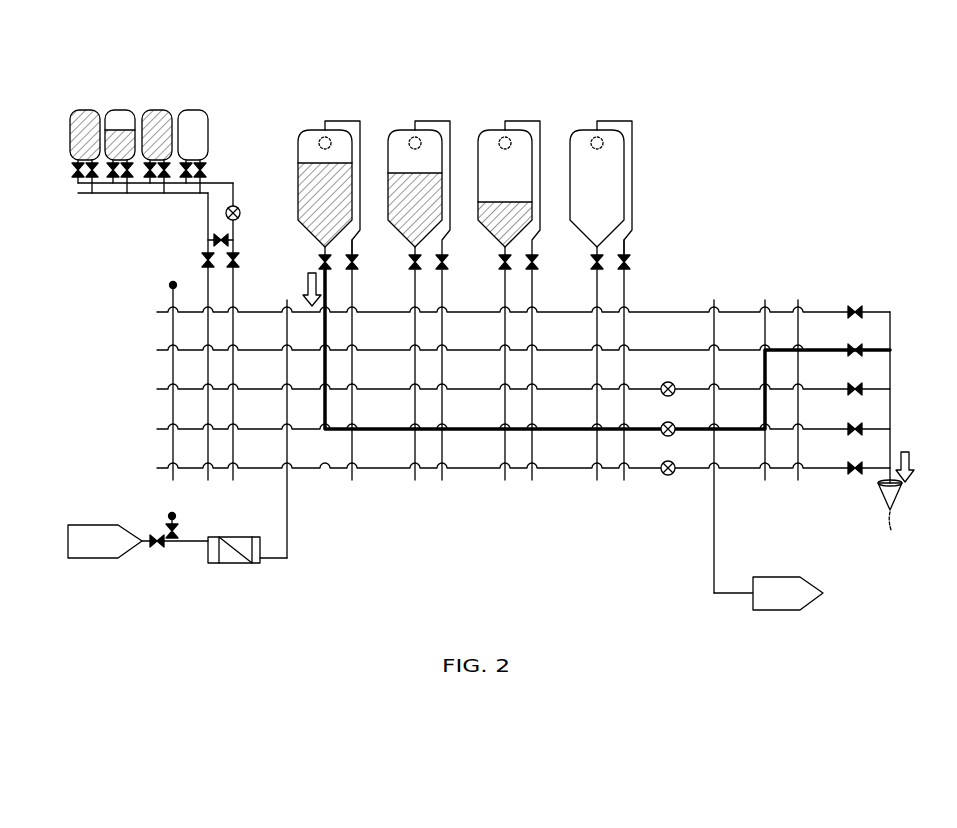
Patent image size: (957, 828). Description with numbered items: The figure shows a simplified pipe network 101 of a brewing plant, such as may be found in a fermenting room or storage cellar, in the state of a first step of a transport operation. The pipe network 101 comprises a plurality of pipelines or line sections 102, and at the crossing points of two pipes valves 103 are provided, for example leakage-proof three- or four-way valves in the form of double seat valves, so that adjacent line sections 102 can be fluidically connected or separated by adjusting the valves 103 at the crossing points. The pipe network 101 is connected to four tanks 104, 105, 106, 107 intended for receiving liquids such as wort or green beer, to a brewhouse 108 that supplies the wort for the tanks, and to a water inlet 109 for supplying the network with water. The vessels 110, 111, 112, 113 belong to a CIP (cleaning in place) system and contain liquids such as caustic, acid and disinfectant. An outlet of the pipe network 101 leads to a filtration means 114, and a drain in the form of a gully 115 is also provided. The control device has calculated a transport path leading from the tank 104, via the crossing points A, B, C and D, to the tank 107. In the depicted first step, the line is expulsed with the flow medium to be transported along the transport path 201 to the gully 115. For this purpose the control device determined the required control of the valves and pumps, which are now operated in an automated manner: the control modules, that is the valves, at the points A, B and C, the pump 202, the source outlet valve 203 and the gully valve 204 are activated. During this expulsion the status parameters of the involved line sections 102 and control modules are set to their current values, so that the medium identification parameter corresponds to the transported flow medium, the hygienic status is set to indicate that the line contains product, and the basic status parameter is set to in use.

The pipe network 101 is at (697, 273).
The line sections 102 is at (478, 470).
The valves 103 is at (414, 472).
The tank 104 is at (302, 130).
The tank 105 is at (392, 130).
The tank 106 is at (482, 130).
The tank 107 is at (572, 130).
The brewhouse 108 is at (95, 525).
The water inlet 109 is at (169, 285).
The vessel 110 is at (86, 110).
The vessel 111 is at (121, 110).
The vessel 112 is at (158, 110).
The vessel 113 is at (194, 110).
The filtration means 114 is at (776, 577).
The gully 115 is at (904, 495).
The transport path 201 is at (892, 365).
The pump 202 is at (664, 437).
The source outlet valve 203 is at (318, 262).
The gully valve 204 is at (860, 348).
The crossing point A is at (323, 432).
The crossing point B is at (762, 436).
The crossing point C is at (768, 348).
The crossing point D is at (608, 347).